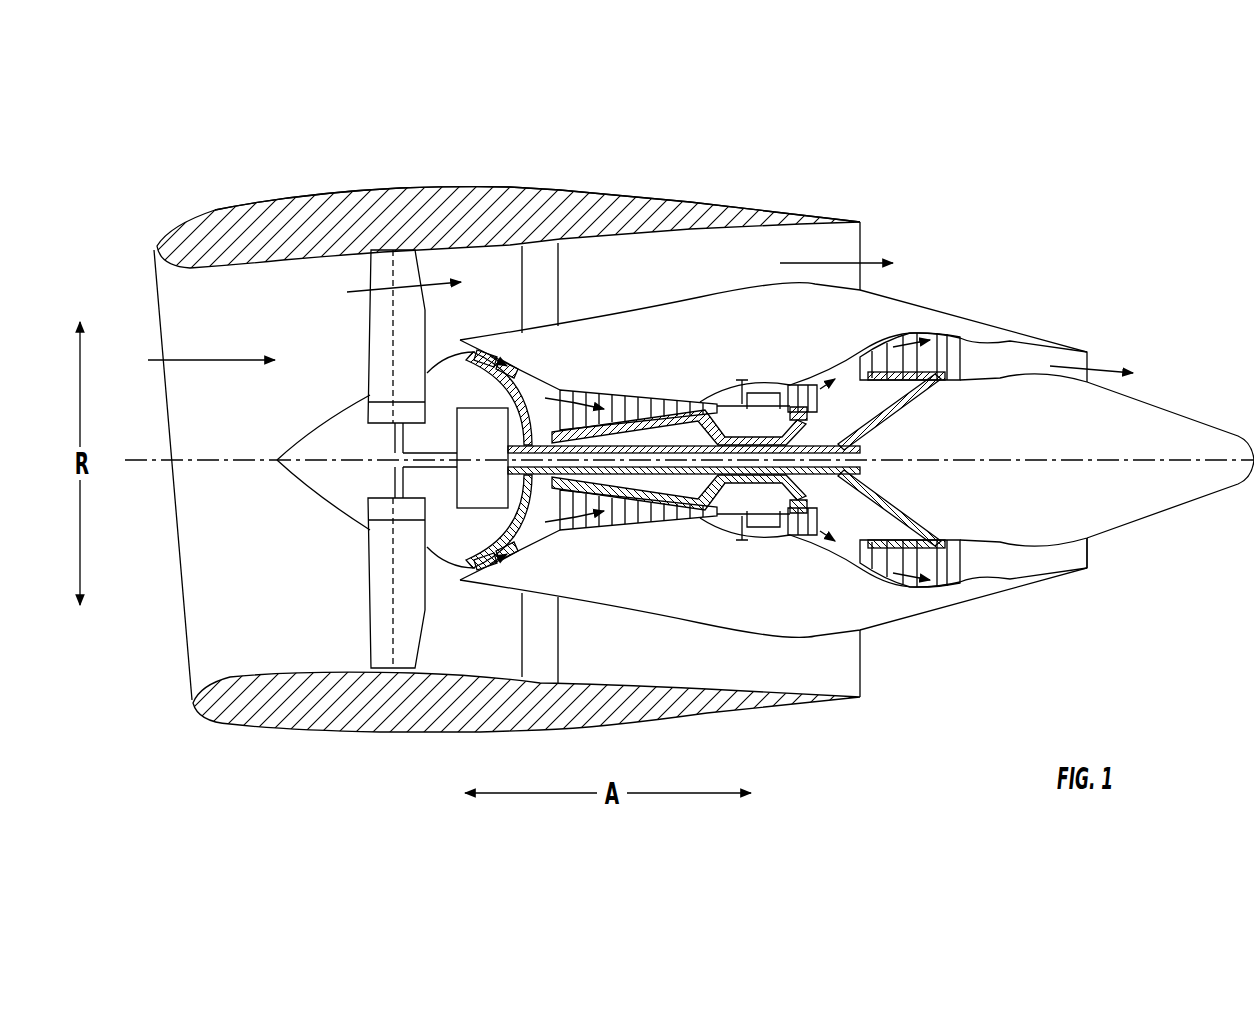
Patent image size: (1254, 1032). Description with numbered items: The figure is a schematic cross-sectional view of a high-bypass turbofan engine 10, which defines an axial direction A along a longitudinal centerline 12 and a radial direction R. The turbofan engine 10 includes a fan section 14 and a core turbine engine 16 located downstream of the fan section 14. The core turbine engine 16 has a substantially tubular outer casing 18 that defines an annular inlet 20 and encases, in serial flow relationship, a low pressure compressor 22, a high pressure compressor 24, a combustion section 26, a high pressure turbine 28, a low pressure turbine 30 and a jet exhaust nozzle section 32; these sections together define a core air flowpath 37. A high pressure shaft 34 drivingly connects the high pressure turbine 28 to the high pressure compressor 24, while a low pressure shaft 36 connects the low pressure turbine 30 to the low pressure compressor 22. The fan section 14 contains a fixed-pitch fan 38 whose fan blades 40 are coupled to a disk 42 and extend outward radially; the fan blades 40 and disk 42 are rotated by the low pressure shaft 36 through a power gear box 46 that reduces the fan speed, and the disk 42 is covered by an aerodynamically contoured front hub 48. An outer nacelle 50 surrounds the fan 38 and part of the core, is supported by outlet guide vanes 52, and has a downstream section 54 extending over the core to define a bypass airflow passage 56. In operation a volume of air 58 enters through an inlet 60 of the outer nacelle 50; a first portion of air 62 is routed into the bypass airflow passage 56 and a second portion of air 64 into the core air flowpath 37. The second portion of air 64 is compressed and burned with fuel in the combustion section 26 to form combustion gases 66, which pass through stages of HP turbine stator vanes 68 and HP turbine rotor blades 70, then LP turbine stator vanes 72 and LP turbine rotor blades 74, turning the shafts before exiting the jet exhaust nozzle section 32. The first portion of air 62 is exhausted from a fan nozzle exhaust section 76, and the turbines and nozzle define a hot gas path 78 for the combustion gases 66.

The turbofan engine 10 is at (1002, 203).
The longitudinal centerline 12 is at (1027, 458).
The fan section 14 is at (325, 272).
The core turbine engine 16 is at (678, 346).
The outer casing 18 is at (717, 625).
The annular inlet 20 is at (462, 568).
The low pressure compressor 22 is at (516, 500).
The high pressure compressor 24 is at (591, 520).
The combustion section 26 is at (755, 531).
The high pressure turbine 28 is at (886, 523).
The low pressure turbine 30 is at (946, 586).
The jet exhaust nozzle section 32 is at (1004, 571).
The high pressure shaft 34 is at (791, 412).
The low pressure shaft 36 is at (847, 440).
The core air flowpath 37 is at (558, 549).
The fixed-pitch fan 38 is at (331, 514).
The fan blades 40 is at (367, 612).
The disk 42 is at (372, 416).
The power gear box 46 is at (493, 425).
The front hub 48 is at (290, 480).
The outer nacelle 50 is at (413, 740).
The outlet guide vanes 52 is at (560, 266).
The downstream section 54 is at (800, 214).
The bypass airflow passage 56 is at (707, 280).
The volume of air 58 is at (210, 358).
The inlet 60 is at (188, 672).
The first portion of air 62 is at (822, 262).
The second portion of air 64 is at (450, 352).
The combustion gases 66 is at (903, 333).
The HP turbine stator vanes 68 is at (772, 530).
The HP turbine rotor blades 70 is at (805, 514).
The LP turbine stator vanes 72 is at (870, 570).
The LP turbine rotor blades 74 is at (880, 580).
The fan nozzle exhaust section 76 is at (849, 248).
The hot gas path 78 is at (848, 360).